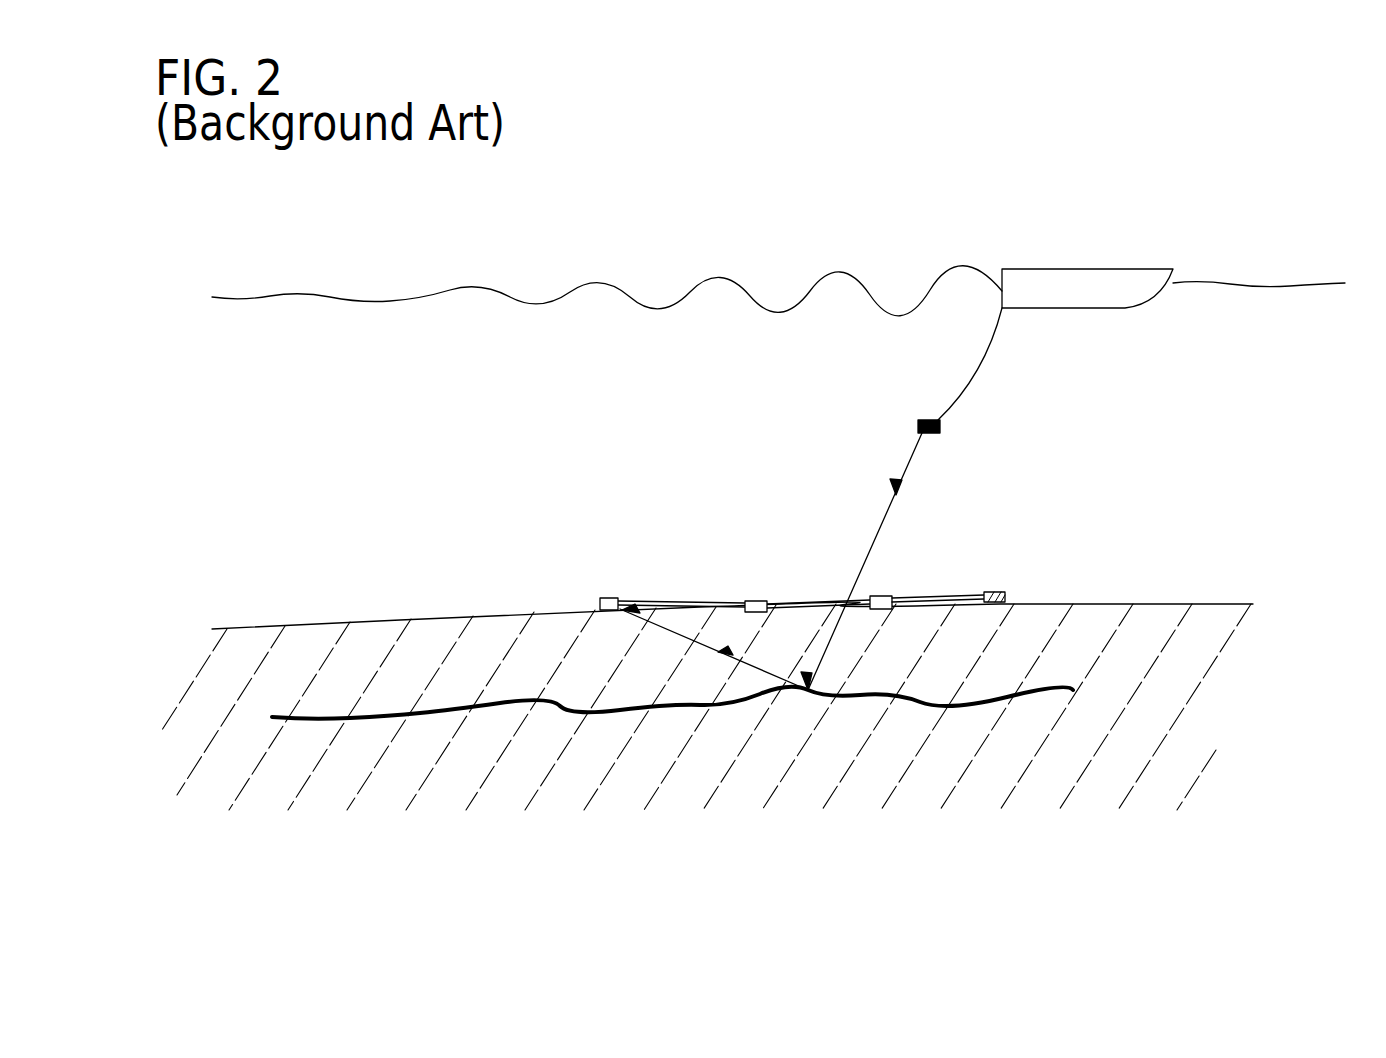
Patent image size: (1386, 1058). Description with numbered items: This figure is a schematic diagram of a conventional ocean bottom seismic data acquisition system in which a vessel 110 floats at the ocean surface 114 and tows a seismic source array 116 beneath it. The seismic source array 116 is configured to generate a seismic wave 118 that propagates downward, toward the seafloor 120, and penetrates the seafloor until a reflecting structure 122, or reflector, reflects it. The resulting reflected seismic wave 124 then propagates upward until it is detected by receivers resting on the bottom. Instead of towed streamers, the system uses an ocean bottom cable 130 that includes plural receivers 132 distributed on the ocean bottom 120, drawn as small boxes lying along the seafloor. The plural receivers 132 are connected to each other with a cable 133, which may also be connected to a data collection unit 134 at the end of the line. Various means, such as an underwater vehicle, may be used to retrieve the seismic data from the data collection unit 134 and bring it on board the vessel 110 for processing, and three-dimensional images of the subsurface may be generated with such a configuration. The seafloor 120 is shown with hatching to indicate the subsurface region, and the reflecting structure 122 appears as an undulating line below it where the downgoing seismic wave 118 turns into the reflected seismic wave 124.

The vessel 110 is at (1160, 217).
The ocean surface 114 is at (263, 297).
The seismic source array 116 is at (932, 436).
The seismic wave 118 is at (871, 548).
The seafloor 120 is at (1160, 603).
The reflecting structure 122 is at (1007, 696).
The reflected seismic wave 124 is at (681, 635).
The ocean bottom cable 130 is at (710, 600).
The receivers 132 is at (611, 598).
The cable 133 is at (938, 598).
The data collection unit 134 is at (997, 592).